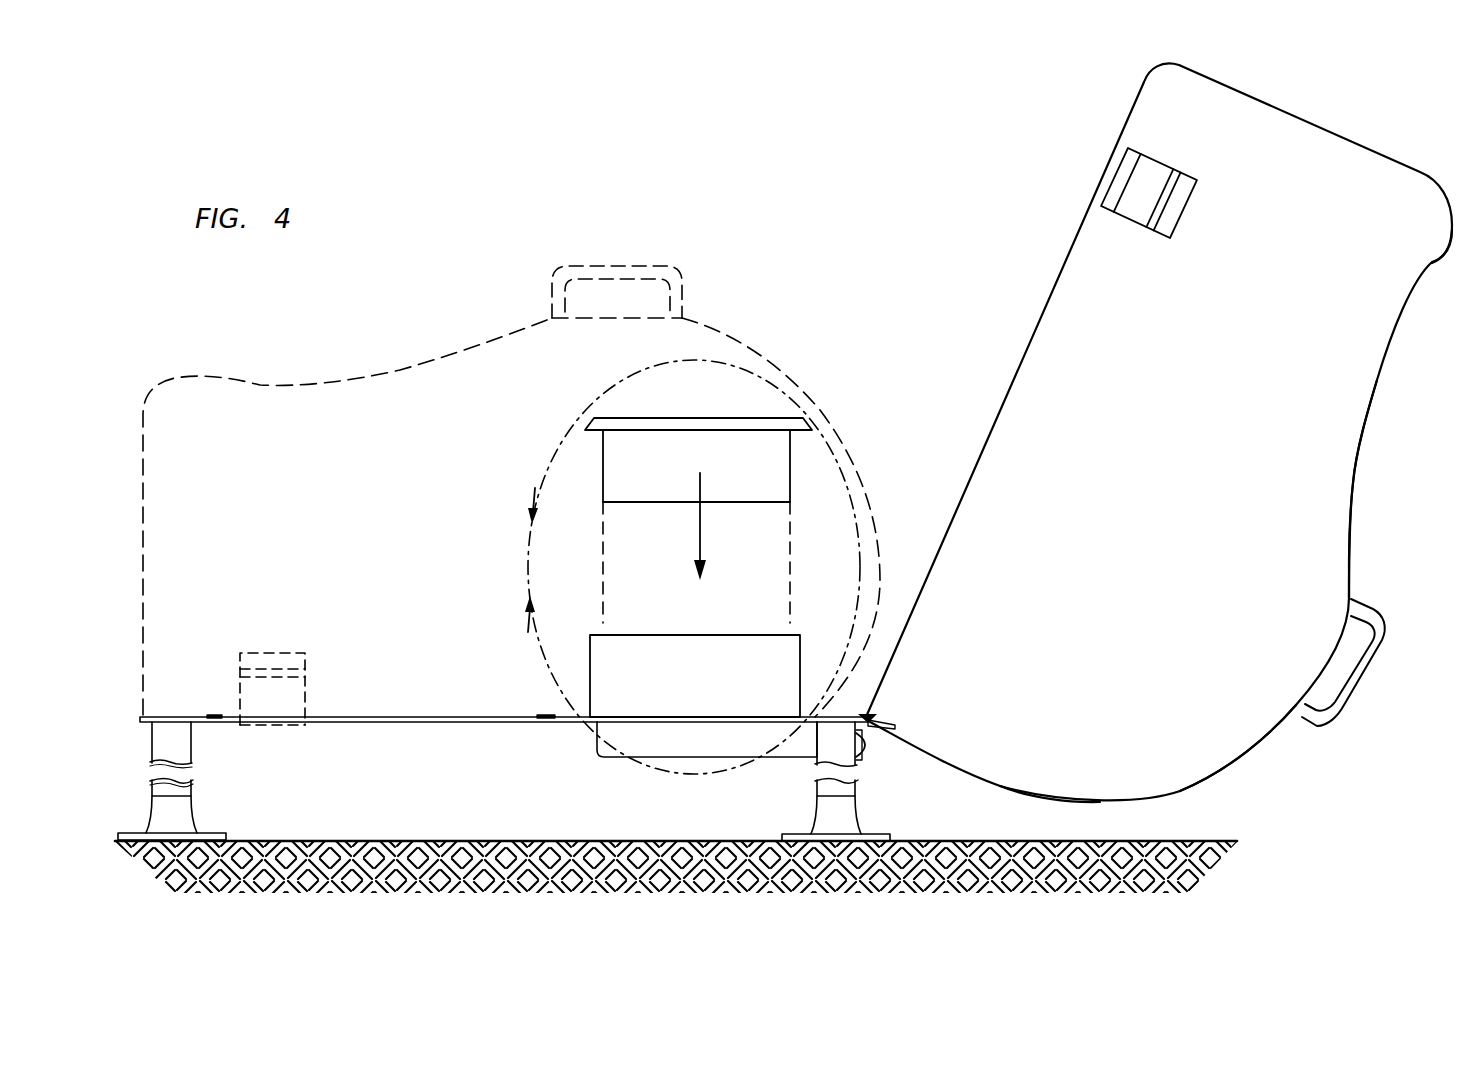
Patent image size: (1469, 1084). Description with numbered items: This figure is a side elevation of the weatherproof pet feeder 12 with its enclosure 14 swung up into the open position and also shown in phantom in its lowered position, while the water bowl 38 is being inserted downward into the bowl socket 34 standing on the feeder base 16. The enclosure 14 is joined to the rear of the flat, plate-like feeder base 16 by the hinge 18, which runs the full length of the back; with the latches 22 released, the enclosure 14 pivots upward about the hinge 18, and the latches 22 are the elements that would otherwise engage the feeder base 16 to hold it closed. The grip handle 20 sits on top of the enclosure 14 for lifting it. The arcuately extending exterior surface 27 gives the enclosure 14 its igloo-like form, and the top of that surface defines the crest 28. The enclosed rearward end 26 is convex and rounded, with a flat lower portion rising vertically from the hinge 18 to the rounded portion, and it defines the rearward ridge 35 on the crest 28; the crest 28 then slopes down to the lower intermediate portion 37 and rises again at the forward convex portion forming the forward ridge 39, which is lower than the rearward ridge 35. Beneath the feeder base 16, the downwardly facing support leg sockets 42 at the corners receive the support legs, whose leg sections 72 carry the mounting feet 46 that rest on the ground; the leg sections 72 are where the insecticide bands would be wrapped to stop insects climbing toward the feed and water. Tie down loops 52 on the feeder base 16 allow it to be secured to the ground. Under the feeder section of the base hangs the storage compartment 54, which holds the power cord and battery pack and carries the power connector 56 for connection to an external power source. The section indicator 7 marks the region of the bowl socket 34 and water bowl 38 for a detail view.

The section view indicator 7 is at (540, 550).
The weatherproof pet feeder 12 is at (392, 312).
The enclosure 14 is at (1382, 360).
The feeder base 16 is at (347, 715).
The hinge 18 is at (875, 718).
The grip handle 20 is at (1356, 686).
The latches 22 is at (286, 648).
The enclosed rearward end 26 is at (1040, 787).
The exterior surface 27 is at (1365, 419).
The crest 28 is at (1343, 531).
The bowl socket 34 is at (597, 652).
The rearward ridge 35 is at (1235, 764).
The intermediate portion 37 is at (1355, 482).
The water bowl 38 is at (603, 464).
The forward ridge 39 is at (1429, 264).
The support leg sockets 42 is at (168, 737).
The mounting feet 46 is at (183, 825).
The tie down loops 52 is at (215, 712).
The storage compartment 54 is at (598, 745).
The power connector 56 is at (868, 748).
The leg sections 72 is at (188, 788).